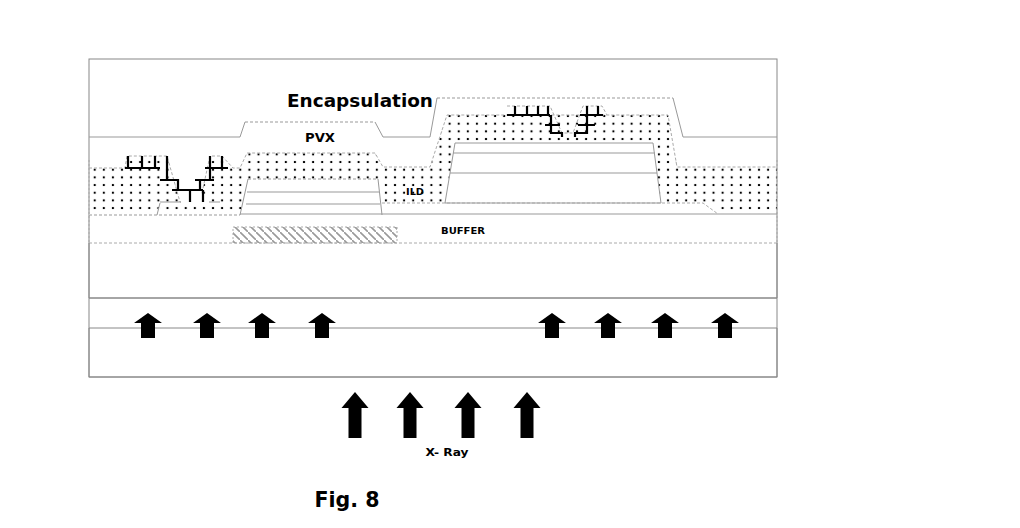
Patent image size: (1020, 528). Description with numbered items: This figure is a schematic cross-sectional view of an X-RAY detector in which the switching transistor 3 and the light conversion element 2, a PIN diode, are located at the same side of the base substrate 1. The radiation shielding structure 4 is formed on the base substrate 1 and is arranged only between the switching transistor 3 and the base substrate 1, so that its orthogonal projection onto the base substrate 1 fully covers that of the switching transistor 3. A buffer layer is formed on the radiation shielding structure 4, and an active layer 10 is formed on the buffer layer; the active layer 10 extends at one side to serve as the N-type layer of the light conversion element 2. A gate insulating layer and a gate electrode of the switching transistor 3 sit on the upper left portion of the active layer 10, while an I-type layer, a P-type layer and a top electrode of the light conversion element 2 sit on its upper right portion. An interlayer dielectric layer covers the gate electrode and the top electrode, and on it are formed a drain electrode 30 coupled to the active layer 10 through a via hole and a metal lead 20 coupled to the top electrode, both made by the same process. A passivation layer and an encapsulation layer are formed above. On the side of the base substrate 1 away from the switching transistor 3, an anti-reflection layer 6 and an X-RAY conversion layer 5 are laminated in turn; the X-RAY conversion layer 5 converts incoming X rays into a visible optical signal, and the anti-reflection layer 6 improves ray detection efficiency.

The base substrate 1 is at (89, 262).
The light conversion element 2 is at (426, 52).
The switching transistor 3 is at (97, 52).
The radiation shielding structure 4 is at (233, 233).
The X-RAY conversion layer 5 is at (89, 351).
The anti-reflection layer 6 is at (89, 313).
The active layer 10 is at (700, 202).
The metal lead 20 is at (603, 107).
The drain electrode 30 is at (163, 180).